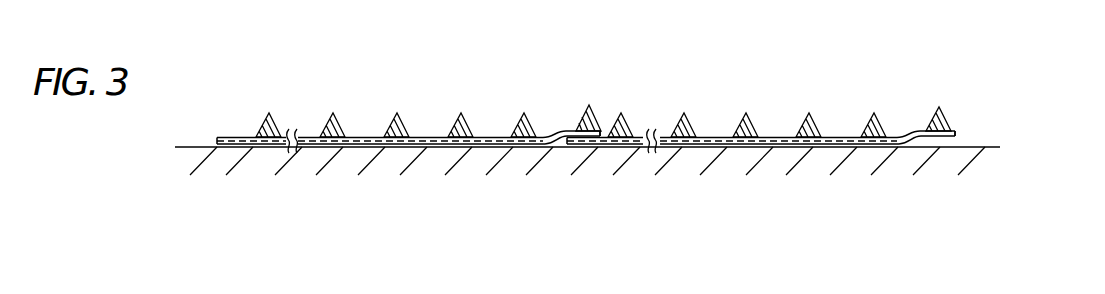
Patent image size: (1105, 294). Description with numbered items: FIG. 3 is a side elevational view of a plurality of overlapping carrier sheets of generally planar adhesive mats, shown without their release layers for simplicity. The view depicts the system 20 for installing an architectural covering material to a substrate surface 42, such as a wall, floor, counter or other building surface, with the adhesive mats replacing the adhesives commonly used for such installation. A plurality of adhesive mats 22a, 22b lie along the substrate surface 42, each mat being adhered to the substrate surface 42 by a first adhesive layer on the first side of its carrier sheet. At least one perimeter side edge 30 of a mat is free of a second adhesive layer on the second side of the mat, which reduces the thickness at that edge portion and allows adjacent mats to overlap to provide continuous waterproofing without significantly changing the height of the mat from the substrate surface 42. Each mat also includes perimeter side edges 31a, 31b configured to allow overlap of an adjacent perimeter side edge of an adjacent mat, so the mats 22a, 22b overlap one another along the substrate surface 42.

The system 20 is at (643, 104).
The adhesive mat 22a is at (351, 118).
The adhesive mat 22b is at (769, 110).
The perimeter side edge 30 is at (234, 137).
The perimeter side edge 31a is at (248, 147).
The perimeter side edge 31b is at (563, 129).
The substrate surface 42 is at (973, 147).